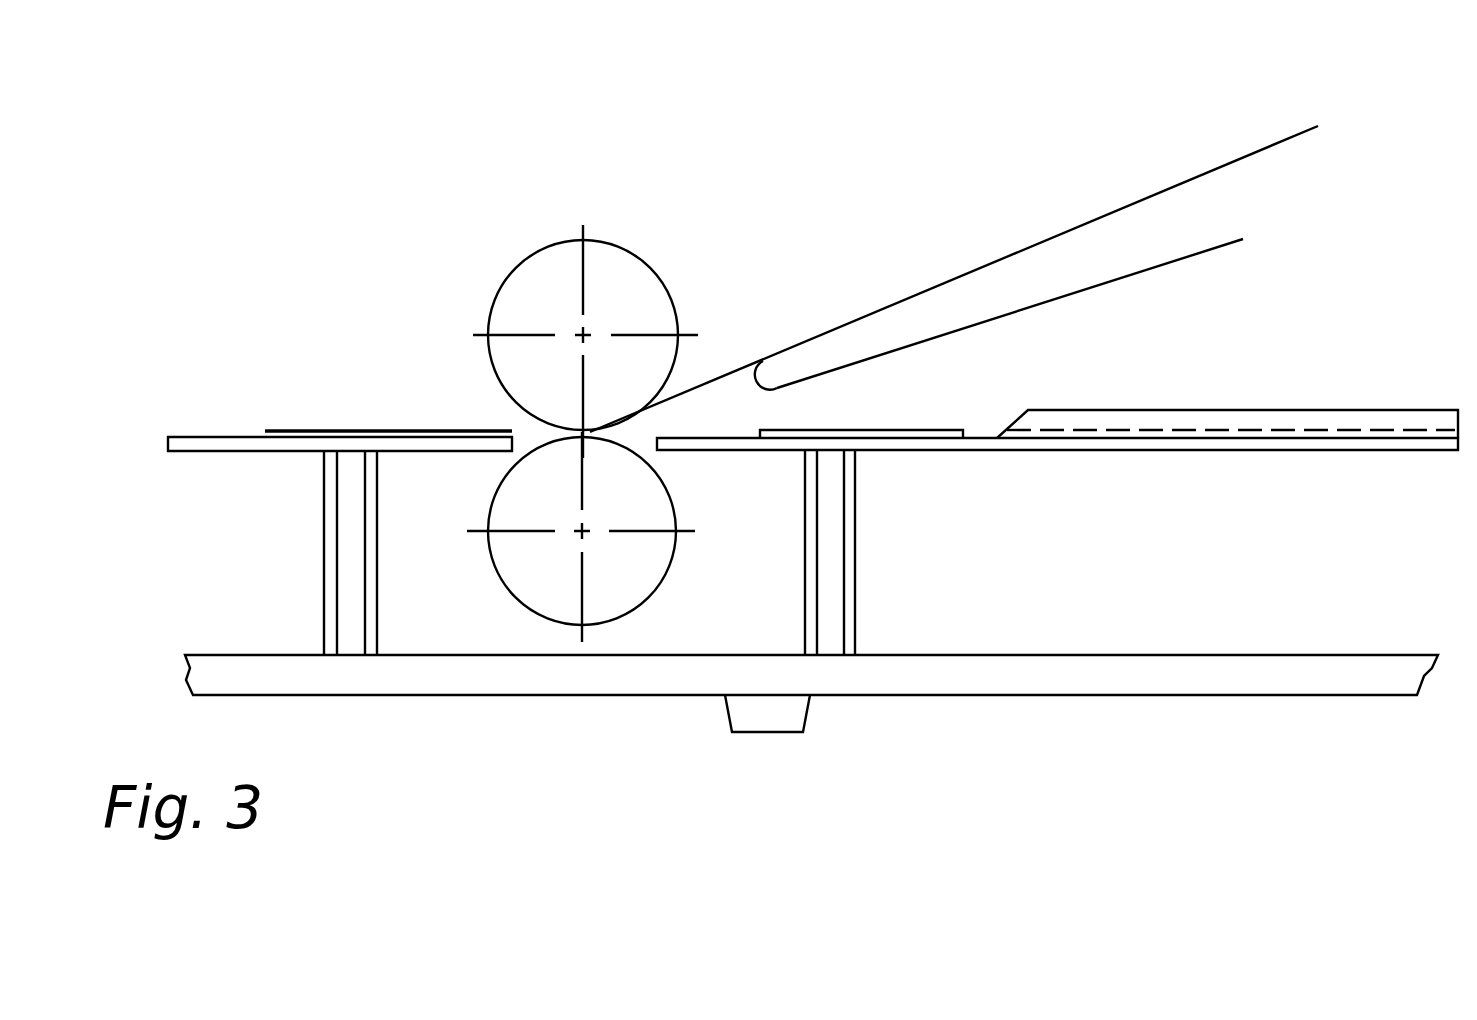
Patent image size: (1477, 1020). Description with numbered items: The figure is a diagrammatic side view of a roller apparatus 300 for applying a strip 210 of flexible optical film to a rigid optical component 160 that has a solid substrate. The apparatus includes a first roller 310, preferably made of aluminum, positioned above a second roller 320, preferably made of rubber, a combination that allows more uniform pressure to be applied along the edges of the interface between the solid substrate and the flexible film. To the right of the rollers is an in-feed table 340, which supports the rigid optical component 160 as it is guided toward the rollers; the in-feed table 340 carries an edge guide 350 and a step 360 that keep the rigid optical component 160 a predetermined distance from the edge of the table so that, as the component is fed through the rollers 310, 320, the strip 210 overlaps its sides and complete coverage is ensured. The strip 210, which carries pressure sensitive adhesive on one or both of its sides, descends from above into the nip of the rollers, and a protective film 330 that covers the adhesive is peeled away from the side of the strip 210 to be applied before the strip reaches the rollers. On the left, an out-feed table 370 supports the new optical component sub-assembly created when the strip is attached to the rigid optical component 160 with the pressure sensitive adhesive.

The roller apparatus 300 is at (796, 369).
The first roller 310 is at (570, 315).
The second roller 320 is at (548, 623).
The strip of flexible optical film 210 is at (954, 279).
The protective film 330 is at (1053, 314).
The rigid optical component 160 is at (896, 391).
The in-feed table 340 is at (1057, 490).
The edge guide 350 is at (1227, 376).
The step 360 is at (1234, 390).
The out-feed table 370 is at (340, 384).